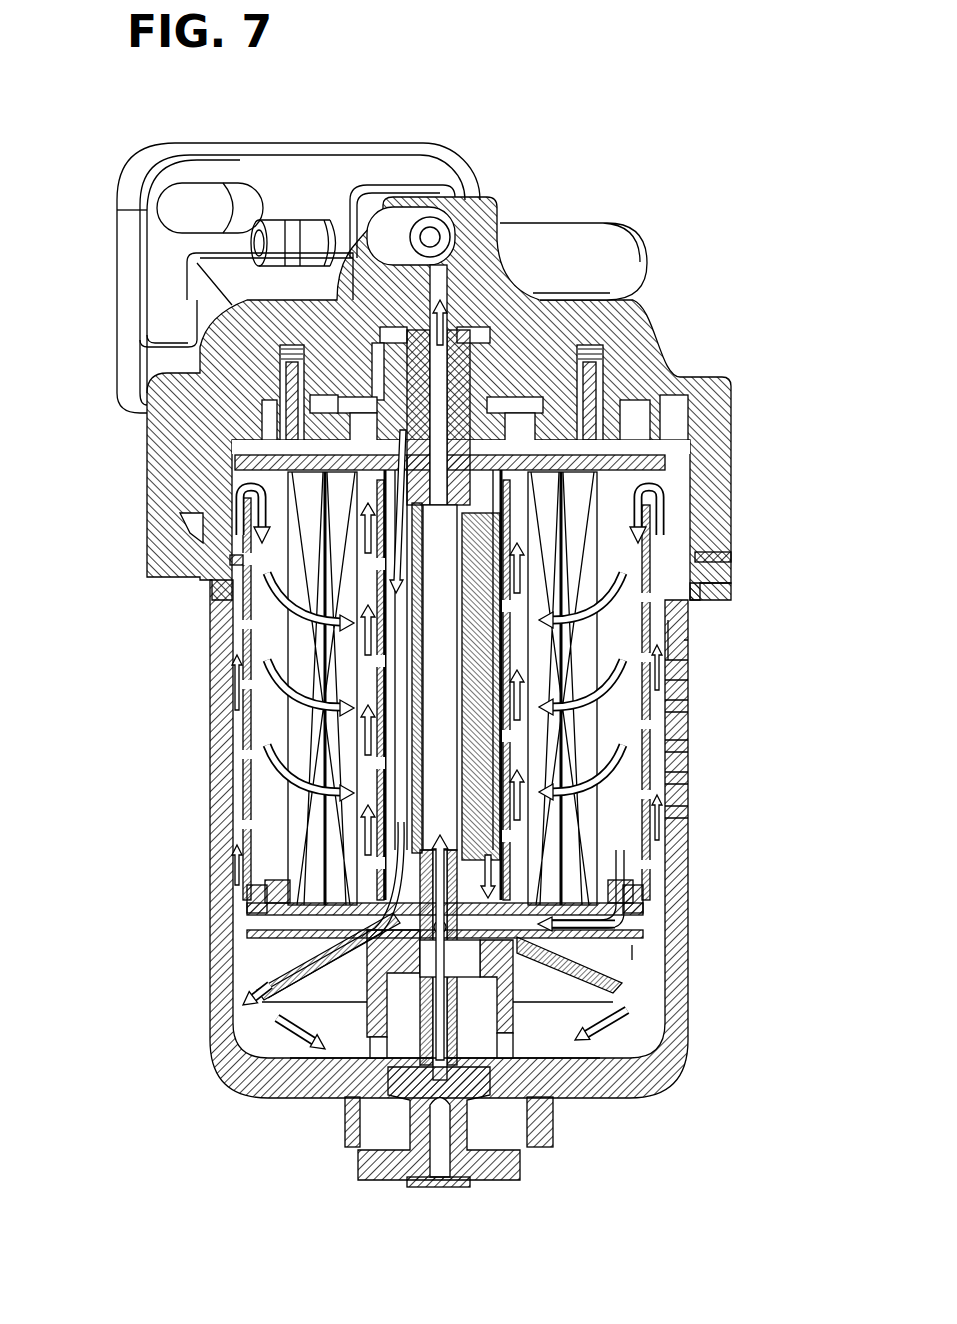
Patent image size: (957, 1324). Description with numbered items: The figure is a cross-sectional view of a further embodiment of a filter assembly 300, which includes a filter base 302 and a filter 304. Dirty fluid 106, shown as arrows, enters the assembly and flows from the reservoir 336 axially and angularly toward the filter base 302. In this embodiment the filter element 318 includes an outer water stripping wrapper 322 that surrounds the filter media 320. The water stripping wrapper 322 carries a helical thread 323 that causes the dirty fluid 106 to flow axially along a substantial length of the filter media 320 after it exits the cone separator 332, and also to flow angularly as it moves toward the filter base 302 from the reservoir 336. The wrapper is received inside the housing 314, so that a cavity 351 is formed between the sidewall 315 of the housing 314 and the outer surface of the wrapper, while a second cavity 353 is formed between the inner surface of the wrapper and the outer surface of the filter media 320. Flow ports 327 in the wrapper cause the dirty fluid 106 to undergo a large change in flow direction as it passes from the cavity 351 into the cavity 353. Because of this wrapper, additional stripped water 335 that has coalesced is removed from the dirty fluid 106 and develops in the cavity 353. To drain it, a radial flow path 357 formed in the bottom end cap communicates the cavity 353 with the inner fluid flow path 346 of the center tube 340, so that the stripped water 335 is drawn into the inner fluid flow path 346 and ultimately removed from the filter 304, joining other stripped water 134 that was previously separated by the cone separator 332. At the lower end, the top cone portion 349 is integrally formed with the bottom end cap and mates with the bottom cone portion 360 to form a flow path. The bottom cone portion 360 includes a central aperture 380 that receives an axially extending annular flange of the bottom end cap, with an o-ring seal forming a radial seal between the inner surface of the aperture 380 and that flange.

The filter assembly 300 is at (108, 101).
The filter base 302 is at (150, 469).
The filter 304 is at (411, 672).
The dirty fluid 106 is at (210, 849).
The flow ports 327 is at (731, 478).
The cavity 351 is at (731, 560).
The cavity 353 is at (730, 584).
The outer water stripping wrapper 322 is at (688, 638).
The sidewall 315 is at (688, 670).
The filter element 318 is at (688, 705).
The helical thread 323 is at (690, 747).
The housing 314 is at (690, 777).
The filter media 320 is at (690, 813).
The center tube 340 is at (353, 669).
The inner fluid flow path 346 is at (445, 757).
The radial flow path 357 is at (527, 922).
The stripped water 335 is at (620, 868).
The cone separator 332 is at (632, 952).
The top cone portion 349 is at (655, 975).
The stripped water 134 is at (258, 1052).
The reservoir 336 is at (342, 1047).
The central aperture 380 is at (412, 1005).
The bottom cone portion 360 is at (557, 973).